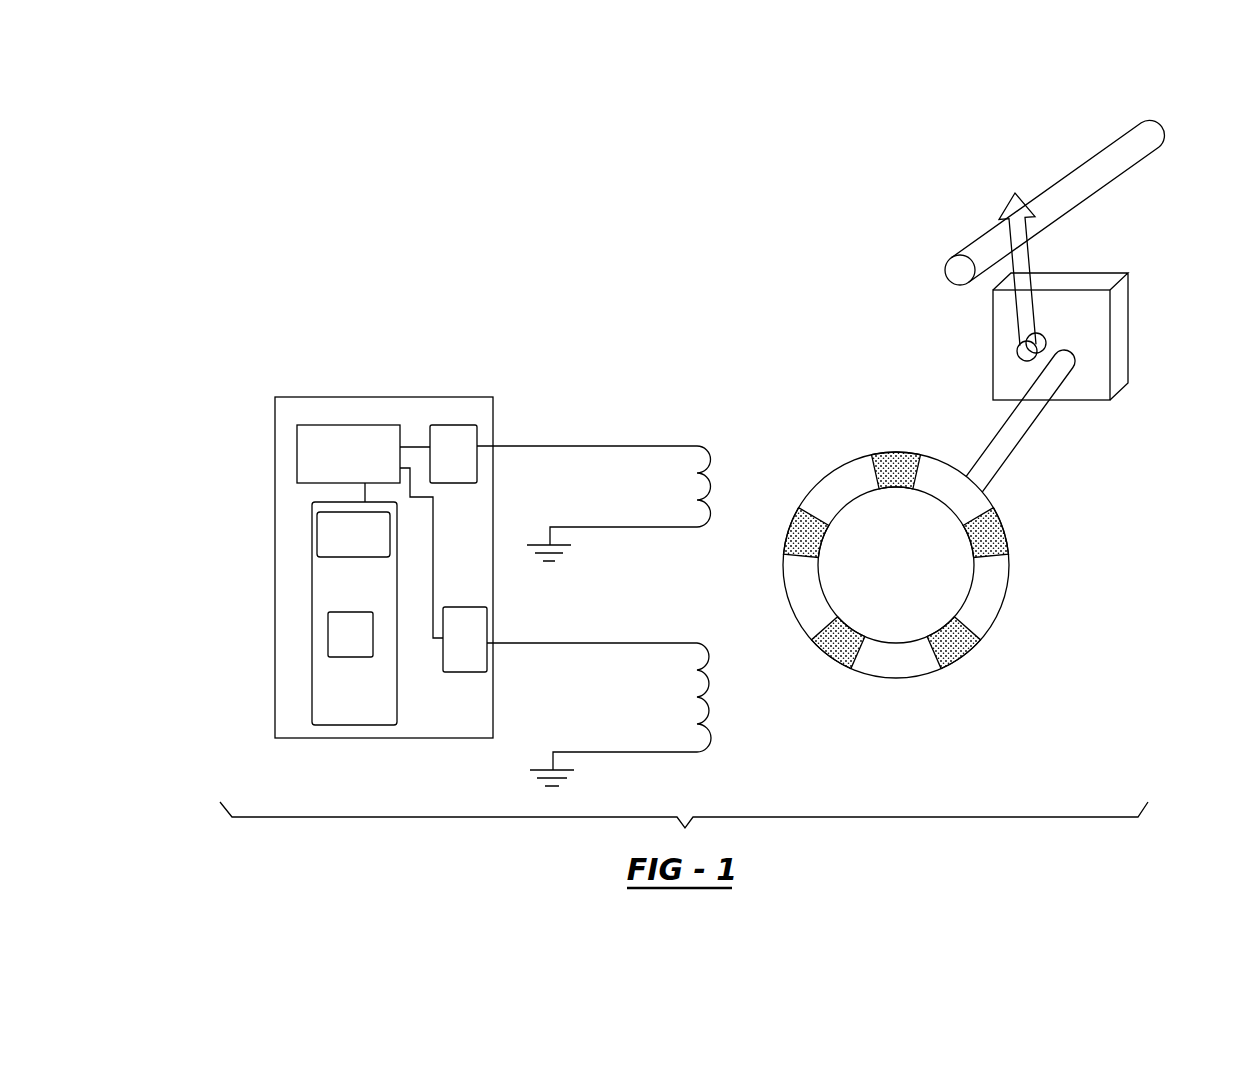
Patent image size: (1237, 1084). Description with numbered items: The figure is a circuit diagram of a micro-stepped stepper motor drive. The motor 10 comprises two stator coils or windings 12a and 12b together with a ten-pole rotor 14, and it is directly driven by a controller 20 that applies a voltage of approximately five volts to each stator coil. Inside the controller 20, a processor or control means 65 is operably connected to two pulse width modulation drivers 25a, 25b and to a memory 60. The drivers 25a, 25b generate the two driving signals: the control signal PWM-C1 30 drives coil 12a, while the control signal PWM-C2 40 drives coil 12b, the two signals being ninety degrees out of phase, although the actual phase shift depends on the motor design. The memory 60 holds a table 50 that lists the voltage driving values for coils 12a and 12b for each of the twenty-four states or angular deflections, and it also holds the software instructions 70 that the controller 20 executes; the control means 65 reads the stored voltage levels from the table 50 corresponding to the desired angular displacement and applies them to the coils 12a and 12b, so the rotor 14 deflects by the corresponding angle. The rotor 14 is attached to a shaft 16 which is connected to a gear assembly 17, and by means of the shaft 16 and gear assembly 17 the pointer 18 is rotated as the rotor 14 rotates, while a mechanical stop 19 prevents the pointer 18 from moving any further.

The motor 10 is at (545, 290).
The controller 20 is at (310, 397).
The control means 65 is at (360, 425).
The pulse width modulation driver 25a is at (443, 425).
The pulse width modulation driver 25b is at (460, 607).
The control signal (PWM-C1) 30 is at (520, 446).
The control signal (PWM-C2) 40 is at (550, 665).
The coil 12a is at (690, 474).
The coil 12b is at (692, 674).
The software instructions 70 is at (316, 535).
The memory 60 is at (312, 590).
The table 50 is at (328, 635).
The ten-pole rotor 14 is at (895, 682).
The shaft 16 is at (1043, 440).
The gear assembly 17 is at (1145, 317).
The pointer 18 is at (1034, 253).
The mechanical stop 19 is at (932, 273).